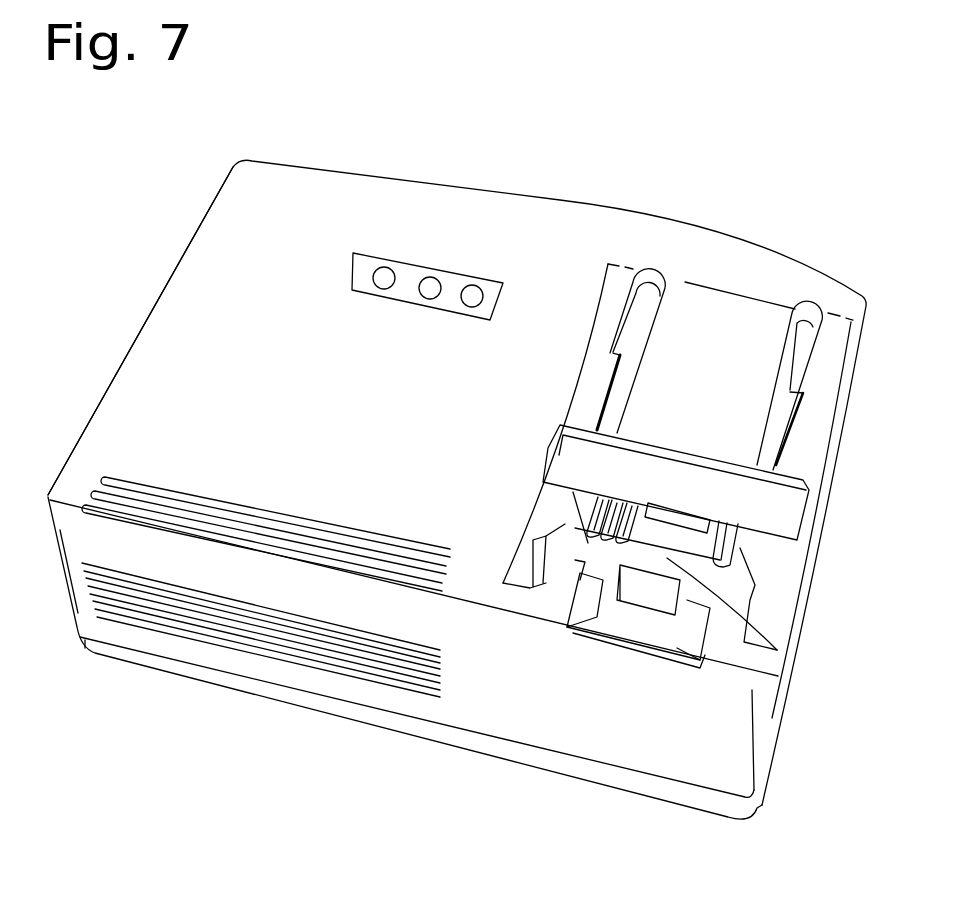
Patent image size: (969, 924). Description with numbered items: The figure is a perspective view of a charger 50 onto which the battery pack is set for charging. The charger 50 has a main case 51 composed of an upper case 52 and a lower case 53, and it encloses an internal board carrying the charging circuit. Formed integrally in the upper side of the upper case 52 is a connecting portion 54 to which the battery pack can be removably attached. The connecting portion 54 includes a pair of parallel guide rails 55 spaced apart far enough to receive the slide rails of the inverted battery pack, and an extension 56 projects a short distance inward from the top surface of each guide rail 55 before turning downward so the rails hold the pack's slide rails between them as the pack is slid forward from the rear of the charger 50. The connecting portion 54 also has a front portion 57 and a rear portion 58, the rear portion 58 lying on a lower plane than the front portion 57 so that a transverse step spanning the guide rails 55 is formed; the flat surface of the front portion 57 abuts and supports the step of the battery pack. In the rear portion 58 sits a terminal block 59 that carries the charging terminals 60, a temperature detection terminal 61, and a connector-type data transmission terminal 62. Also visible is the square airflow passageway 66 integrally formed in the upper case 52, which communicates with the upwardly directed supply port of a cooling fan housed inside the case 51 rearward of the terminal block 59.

The charger 50 is at (577, 178).
The main case 51 is at (772, 246).
The upper case 52 is at (158, 300).
The lower case 53 is at (598, 778).
The connecting portion 54 is at (713, 332).
The guide rails 55 is at (549, 414).
The extension 56 is at (598, 402).
The front portion 57 is at (713, 400).
The rear portion 58 is at (768, 590).
The terminal block 59 is at (665, 537).
The charging terminals 60 is at (572, 562).
The temperature detection terminal 61 is at (583, 620).
The connector-type data transmission terminal 62 is at (684, 522).
The airflow passageway 66 is at (643, 600).